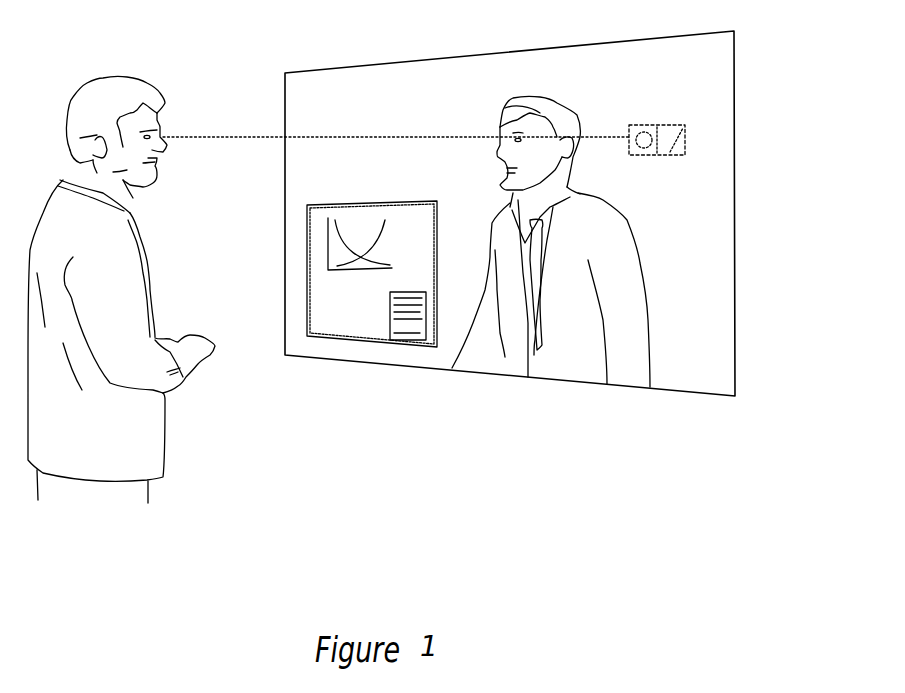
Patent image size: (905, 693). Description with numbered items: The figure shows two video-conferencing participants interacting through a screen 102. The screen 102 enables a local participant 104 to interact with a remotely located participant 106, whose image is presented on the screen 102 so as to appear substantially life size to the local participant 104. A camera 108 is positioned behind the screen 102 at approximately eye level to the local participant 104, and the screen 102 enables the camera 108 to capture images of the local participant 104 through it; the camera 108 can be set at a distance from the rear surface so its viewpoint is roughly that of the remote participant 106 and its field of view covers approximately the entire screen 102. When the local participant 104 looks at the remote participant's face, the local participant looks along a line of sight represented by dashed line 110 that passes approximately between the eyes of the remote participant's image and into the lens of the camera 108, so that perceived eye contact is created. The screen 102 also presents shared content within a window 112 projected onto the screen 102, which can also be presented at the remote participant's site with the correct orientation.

The screen 102 is at (698, 382).
The local participant 104 is at (188, 457).
The remote participant 106 is at (631, 272).
The camera 108 is at (685, 135).
The line of sight 110 is at (215, 137).
The window 112 is at (307, 246).